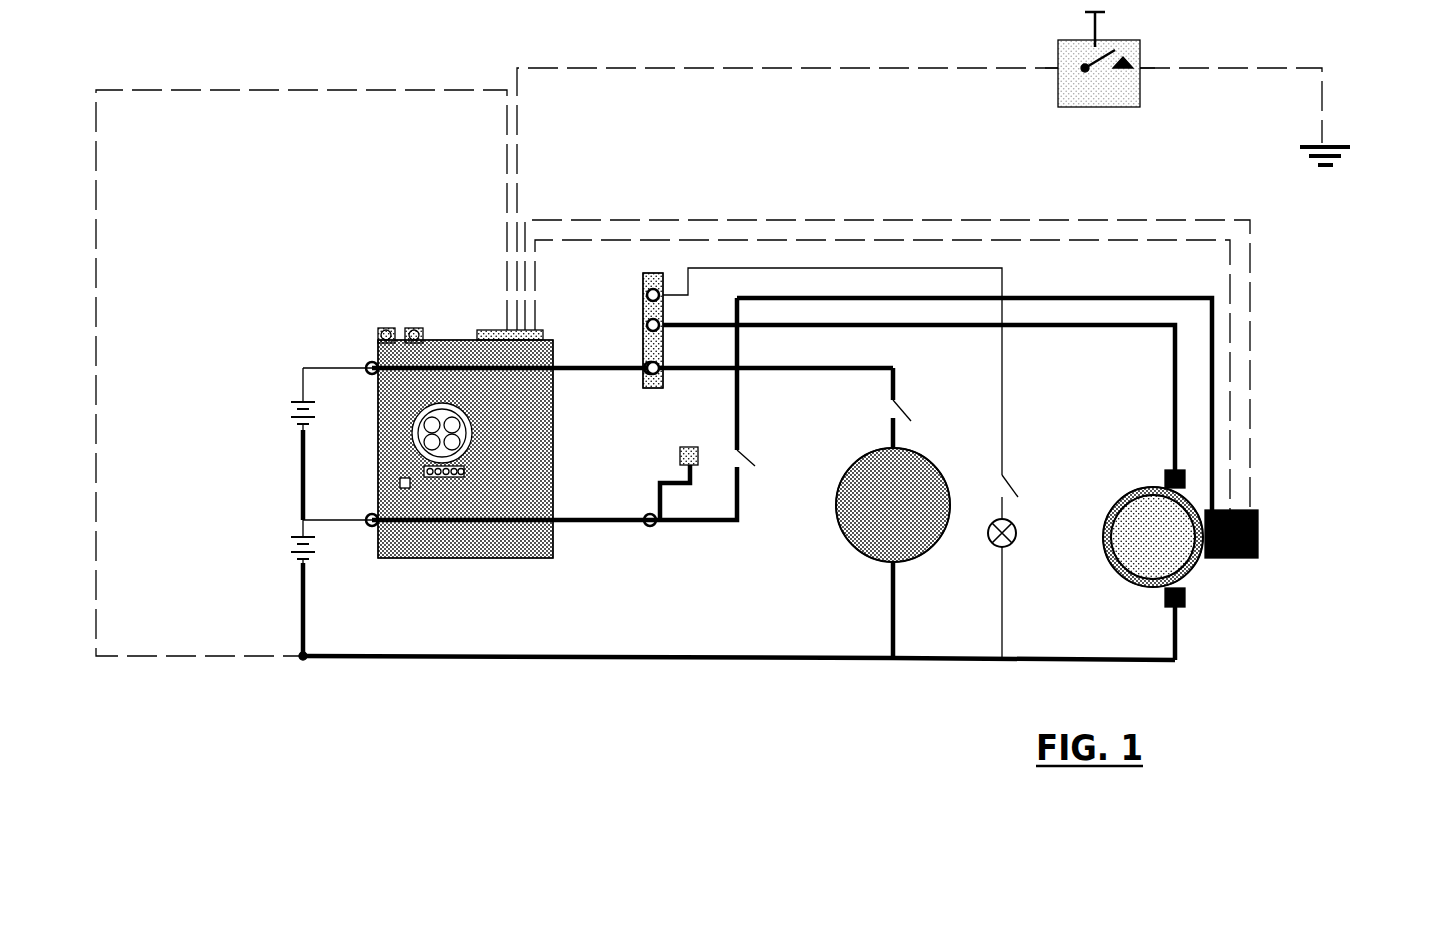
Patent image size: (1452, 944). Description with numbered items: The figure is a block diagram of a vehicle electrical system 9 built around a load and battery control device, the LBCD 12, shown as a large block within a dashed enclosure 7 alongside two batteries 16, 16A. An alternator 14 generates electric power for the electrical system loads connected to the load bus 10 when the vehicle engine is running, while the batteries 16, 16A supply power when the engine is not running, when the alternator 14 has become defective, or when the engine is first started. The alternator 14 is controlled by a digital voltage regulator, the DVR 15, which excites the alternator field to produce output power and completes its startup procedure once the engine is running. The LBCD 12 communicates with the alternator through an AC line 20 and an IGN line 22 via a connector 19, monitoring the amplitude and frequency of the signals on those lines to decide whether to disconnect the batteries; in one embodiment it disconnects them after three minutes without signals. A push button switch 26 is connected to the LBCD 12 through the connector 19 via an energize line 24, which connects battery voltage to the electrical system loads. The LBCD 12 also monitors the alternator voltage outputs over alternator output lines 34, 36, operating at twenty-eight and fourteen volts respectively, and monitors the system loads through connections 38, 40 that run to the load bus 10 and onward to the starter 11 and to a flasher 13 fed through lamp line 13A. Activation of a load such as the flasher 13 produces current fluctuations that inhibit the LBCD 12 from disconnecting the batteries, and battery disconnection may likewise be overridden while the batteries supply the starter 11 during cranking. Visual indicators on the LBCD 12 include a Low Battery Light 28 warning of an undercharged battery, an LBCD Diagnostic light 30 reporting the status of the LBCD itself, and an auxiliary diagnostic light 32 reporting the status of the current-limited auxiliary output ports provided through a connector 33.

The battery compartment enclosure 7 is at (258, 82).
The vehicle electrical system 9 is at (739, 695).
The electrical system load connection 10 is at (643, 293).
The starter 11 is at (846, 466).
The load and battery control device (LBCD) 12 is at (543, 569).
The flasher 13 is at (993, 518).
The lamp wire 13A is at (849, 386).
The alternator 14 is at (1192, 590).
The digital voltage regulator (DVR) 15 is at (1248, 560).
The battery 16 is at (284, 403).
The battery 16A is at (284, 537).
The connector 19 is at (488, 320).
The AC line 20 is at (1276, 433).
The IGN line 22 is at (1240, 412).
The energize line 24 is at (840, 83).
The push button switch 26 is at (1050, 76).
The Low Battery Light (LBL) 28 is at (418, 328).
The LBCD Diagnostic light (LDL) 30 is at (384, 328).
The auxiliary diagnostic light (ADL) 32 is at (405, 483).
The connector 33 is at (450, 403).
The alternator output line 34 is at (1048, 336).
The alternator output line 36 is at (1048, 290).
The connection 38 is at (578, 366).
The connection 40 is at (578, 512).